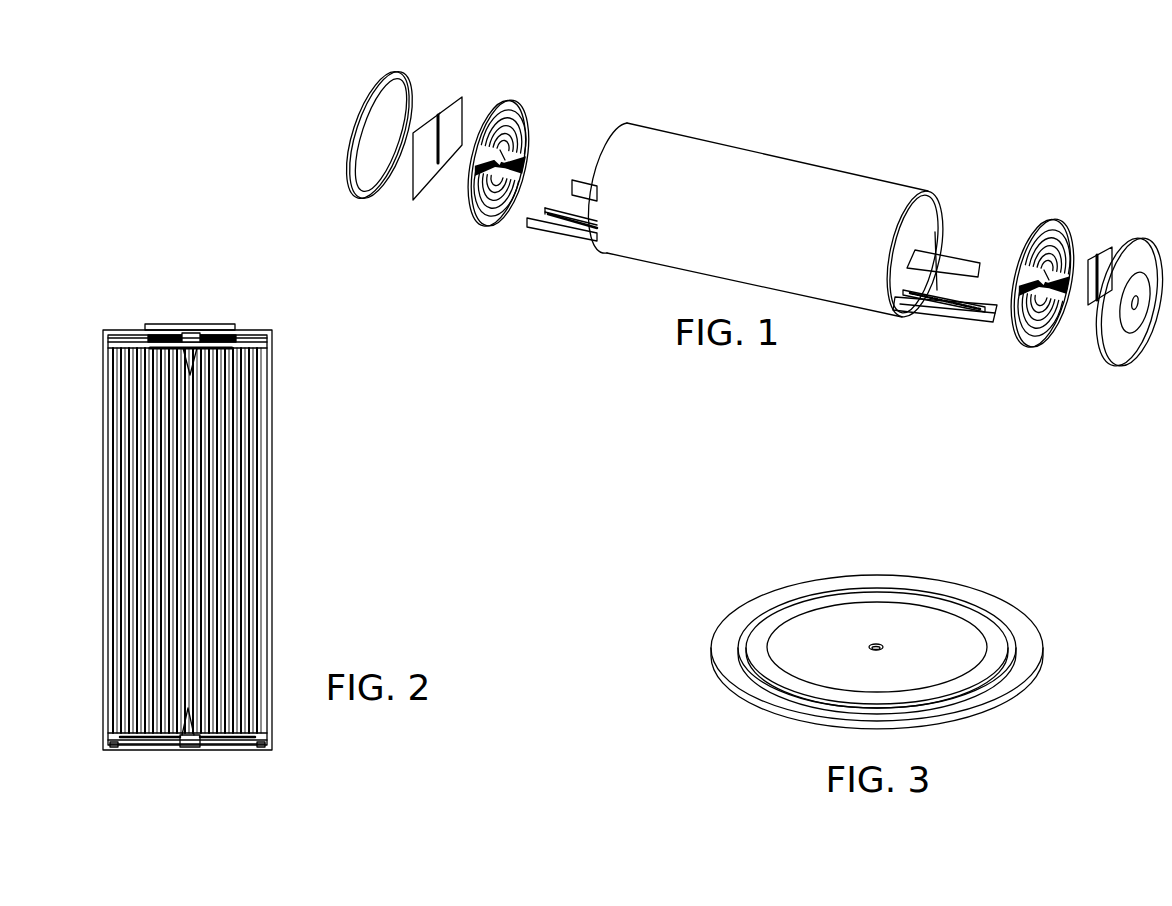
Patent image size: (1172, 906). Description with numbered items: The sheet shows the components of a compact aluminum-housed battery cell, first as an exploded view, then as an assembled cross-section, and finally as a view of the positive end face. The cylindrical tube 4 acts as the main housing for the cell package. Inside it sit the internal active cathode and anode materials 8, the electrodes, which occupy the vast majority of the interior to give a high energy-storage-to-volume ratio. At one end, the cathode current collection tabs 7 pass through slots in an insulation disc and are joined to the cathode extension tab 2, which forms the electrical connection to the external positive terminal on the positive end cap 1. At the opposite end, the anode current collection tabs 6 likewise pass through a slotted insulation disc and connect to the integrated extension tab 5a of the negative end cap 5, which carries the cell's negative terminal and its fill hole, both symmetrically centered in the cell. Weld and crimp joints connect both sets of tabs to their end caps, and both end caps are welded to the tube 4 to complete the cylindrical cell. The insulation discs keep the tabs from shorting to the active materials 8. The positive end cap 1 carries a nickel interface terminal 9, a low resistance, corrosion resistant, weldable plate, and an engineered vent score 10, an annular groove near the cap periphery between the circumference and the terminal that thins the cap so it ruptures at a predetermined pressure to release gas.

In FIG. 1, the positive end cap 1 is at (388, 70).
In FIG. 2, the positive end cap 1 is at (145, 752).
In FIG. 3, the positive end cap 1 is at (770, 591).
In FIG. 1, the cathode extension tab 2 is at (453, 96).
In FIG. 1, the cylindrical tube 4 is at (771, 158).
In FIG. 2, the cylindrical tube 4 is at (270, 607).
In FIG. 1, the negative end cap 5 is at (1138, 236).
In FIG. 2, the negative end cap 5 is at (250, 330).
In FIG. 1, the integrated extension tab 5a is at (1095, 305).
In FIG. 1, the anode current collection tabs 6 is at (930, 322).
In FIG. 2, the anode current collection tabs 6 is at (148, 336).
In FIG. 1, the cathode current collection tabs 7 is at (562, 238).
In FIG. 2, the cathode current collection tabs 7 is at (208, 750).
In FIG. 1, the internal active cathode and anode materials 8 is at (928, 219).
In FIG. 2, the internal active cathode and anode materials 8 is at (258, 503).
In FIG. 3, the nickel interface terminal 9 is at (905, 610).
In FIG. 3, the engineered vent score 10 is at (752, 677).